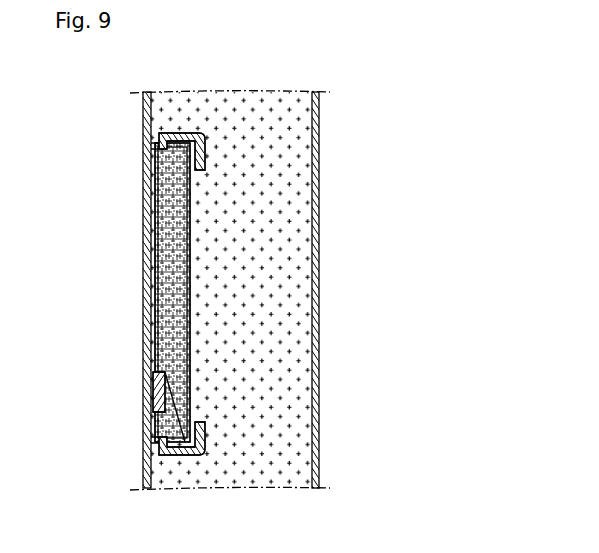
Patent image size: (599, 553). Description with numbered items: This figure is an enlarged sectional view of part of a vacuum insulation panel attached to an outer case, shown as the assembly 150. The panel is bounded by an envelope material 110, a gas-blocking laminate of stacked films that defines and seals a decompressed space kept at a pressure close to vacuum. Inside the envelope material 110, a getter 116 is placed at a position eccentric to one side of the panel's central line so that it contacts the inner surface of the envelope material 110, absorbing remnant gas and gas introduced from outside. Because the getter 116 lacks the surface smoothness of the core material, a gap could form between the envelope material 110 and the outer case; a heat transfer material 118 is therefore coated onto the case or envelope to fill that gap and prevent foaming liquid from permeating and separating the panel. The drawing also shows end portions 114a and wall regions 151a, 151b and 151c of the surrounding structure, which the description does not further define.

The display module / panel assembly 150 is at (245, 290).
The envelope material 110 is at (197, 195).
The upper bent portion of frame 114a is at (188, 130).
The getter 116 is at (184, 442).
The heat transfer material 118 is at (150, 405).
The first side wall of case 151a is at (147, 330).
The second side wall of case 151b is at (319, 382).
The coupling / filler portion 151c is at (167, 253).